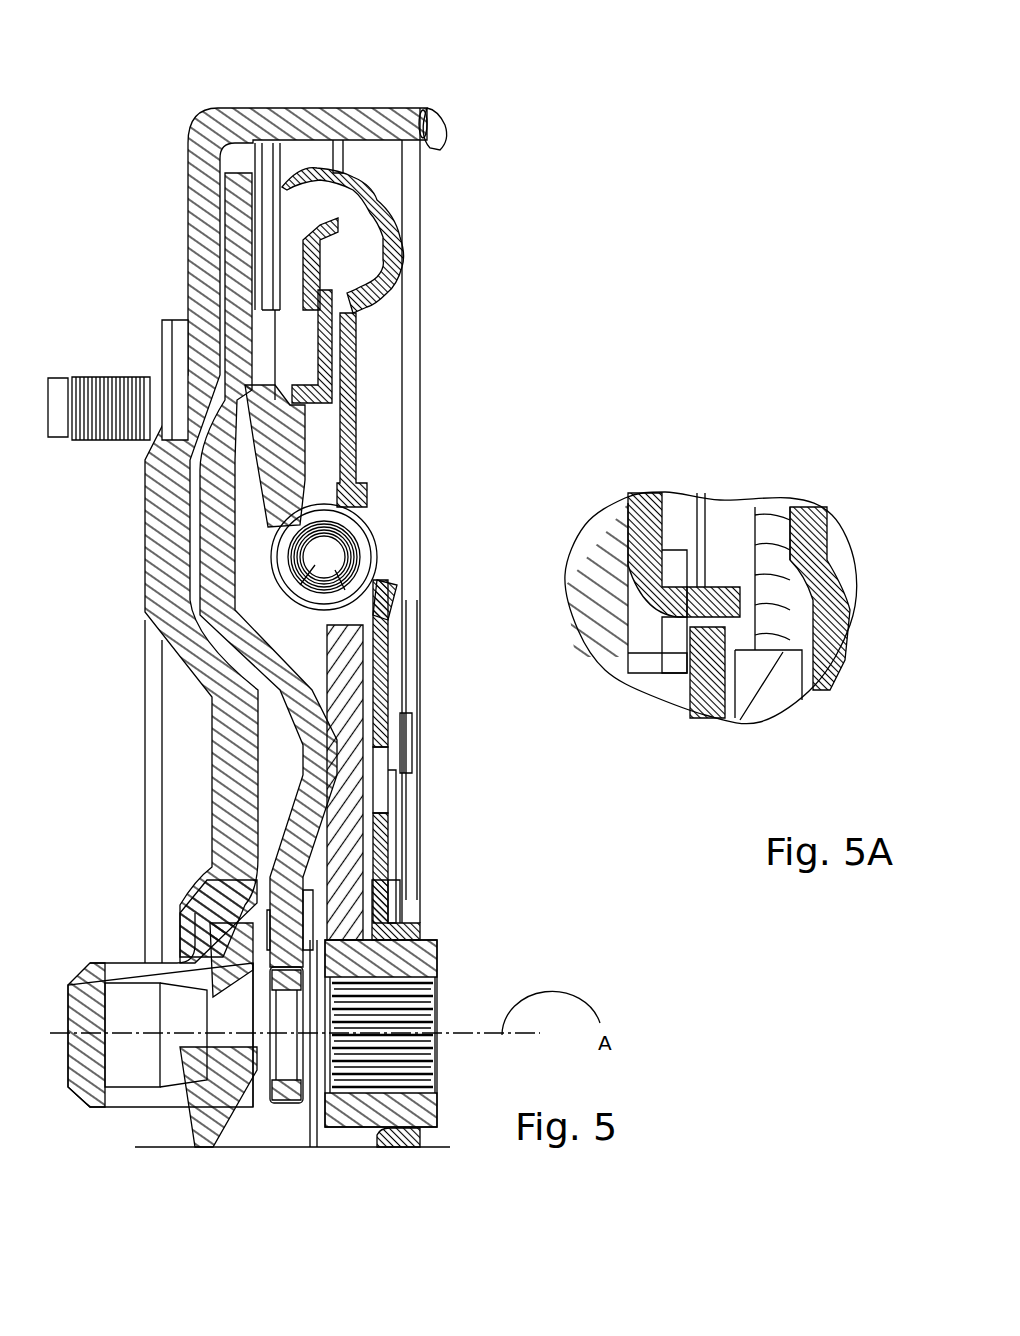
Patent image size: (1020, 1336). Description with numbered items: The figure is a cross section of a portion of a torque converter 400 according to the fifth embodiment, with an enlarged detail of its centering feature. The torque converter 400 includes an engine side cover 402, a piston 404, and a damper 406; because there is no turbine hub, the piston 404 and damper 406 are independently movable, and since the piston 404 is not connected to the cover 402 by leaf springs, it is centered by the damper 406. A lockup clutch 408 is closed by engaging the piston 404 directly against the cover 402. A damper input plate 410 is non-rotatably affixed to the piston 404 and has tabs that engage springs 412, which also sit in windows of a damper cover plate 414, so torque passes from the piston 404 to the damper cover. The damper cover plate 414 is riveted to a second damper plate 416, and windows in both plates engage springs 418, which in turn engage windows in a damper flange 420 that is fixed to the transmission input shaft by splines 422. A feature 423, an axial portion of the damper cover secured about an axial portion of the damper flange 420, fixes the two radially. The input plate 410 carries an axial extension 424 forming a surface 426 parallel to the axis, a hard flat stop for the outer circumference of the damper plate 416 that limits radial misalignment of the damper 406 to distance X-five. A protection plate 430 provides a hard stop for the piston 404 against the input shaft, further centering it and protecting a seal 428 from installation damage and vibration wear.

In FIG. 5, the torque converter 400 is at (175, 95).
In FIG. 5, the engine side cover 402 is at (213, 143).
In FIG. 5, the piston 404 is at (237, 233).
In FIG. 5A, the piston 404 is at (597, 622).
In FIG. 5, the damper 406 is at (380, 162).
In FIG. 5, the lockup clutch 408 is at (229, 140).
In FIG. 5, the damper input plate 410 is at (357, 272).
In FIG. 5A, the damper input plate 410 is at (663, 497).
In FIG. 5, the springs 412 is at (277, 190).
In FIG. 5A, the springs 412 is at (701, 540).
In FIG. 5, the damper cover plate 414 is at (345, 425).
In FIG. 5A, the damper cover plate 414 is at (803, 533).
In FIG. 5, the damper plate 416 is at (295, 450).
In FIG. 5A, the damper plate 416 is at (708, 692).
In FIG. 5, the springs 418 is at (353, 578).
In FIG. 5, the damper flange 420 is at (360, 780).
In FIG. 5A, the damper flange 420 is at (772, 692).
In FIG. 5, the splines 422 is at (452, 1000).
In FIG. 5, the feature 423 is at (428, 898).
In FIG. 5, the extension 424 is at (343, 375).
In FIG. 5A, the extension 424 is at (717, 598).
In FIG. 5A, the surface 426 is at (681, 626).
In FIG. 5, the seal 428 is at (270, 1092).
In FIG. 5, the protection plate 430 is at (427, 923).